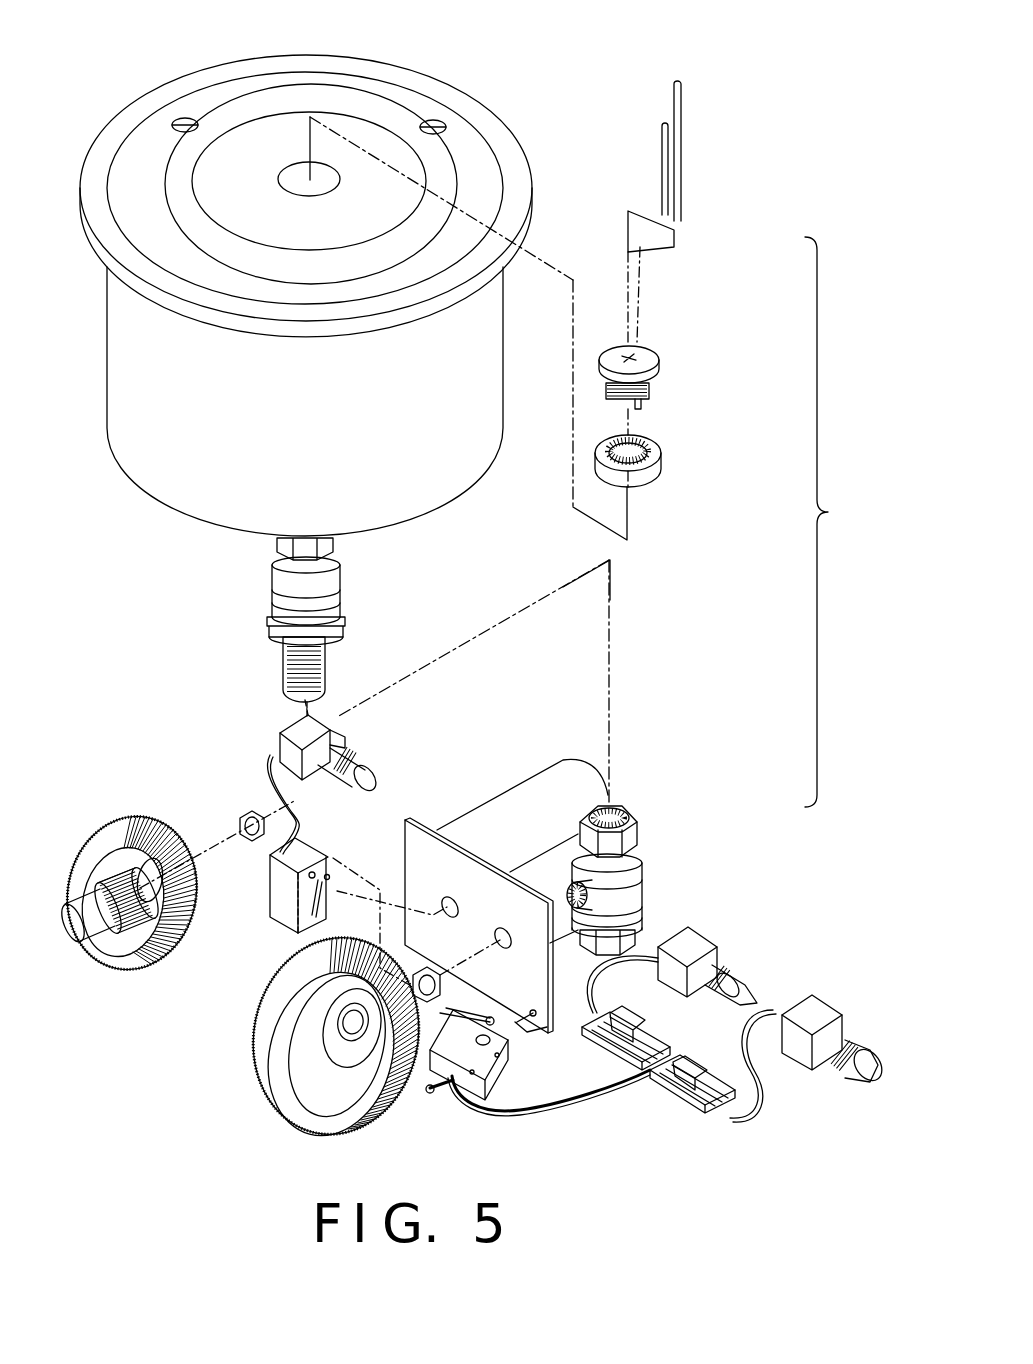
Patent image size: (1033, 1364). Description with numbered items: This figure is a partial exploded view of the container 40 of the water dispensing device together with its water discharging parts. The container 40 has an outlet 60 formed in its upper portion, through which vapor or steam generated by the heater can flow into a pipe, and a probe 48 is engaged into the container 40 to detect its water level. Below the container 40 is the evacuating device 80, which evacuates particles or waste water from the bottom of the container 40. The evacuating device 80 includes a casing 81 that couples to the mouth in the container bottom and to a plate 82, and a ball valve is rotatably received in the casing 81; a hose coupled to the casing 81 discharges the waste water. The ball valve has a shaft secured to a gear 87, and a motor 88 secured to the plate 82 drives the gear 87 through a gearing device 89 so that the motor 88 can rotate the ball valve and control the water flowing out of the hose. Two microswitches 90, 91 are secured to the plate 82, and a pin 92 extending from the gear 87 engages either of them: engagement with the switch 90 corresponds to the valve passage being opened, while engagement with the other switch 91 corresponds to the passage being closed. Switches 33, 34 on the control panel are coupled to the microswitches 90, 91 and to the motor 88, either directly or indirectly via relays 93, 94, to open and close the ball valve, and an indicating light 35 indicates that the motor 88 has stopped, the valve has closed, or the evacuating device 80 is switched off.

The container 40 is at (405, 434).
The outlet 60 is at (187, 118).
The probe 48 is at (687, 159).
The evacuating device 80 is at (644, 742).
The switch 33 is at (295, 757).
The microswitch 90 is at (280, 888).
The gearing device 89 is at (140, 935).
The gear 87 is at (290, 1030).
The pin 92 is at (353, 1132).
The motor 88 is at (527, 810).
The casing 81 is at (627, 898).
The indicating light 35 is at (693, 943).
The switch 34 is at (813, 1018).
The relay 94 is at (610, 1047).
The relay 93 is at (693, 1078).
The microswitch 91 is at (450, 1052).
The plate 82 is at (548, 1023).